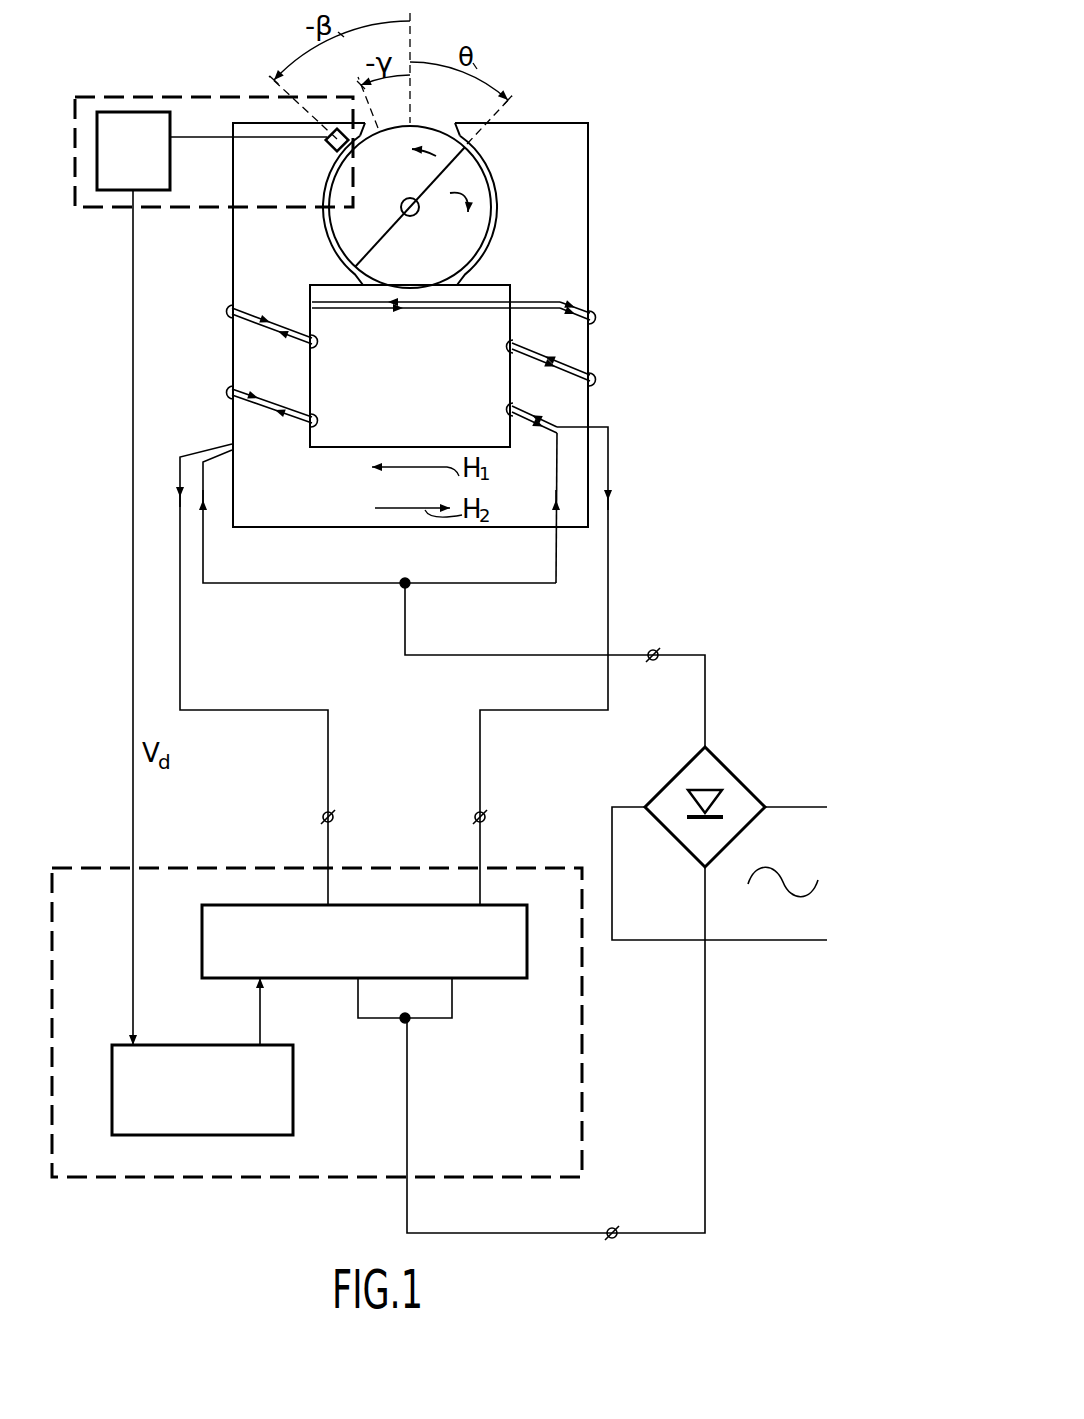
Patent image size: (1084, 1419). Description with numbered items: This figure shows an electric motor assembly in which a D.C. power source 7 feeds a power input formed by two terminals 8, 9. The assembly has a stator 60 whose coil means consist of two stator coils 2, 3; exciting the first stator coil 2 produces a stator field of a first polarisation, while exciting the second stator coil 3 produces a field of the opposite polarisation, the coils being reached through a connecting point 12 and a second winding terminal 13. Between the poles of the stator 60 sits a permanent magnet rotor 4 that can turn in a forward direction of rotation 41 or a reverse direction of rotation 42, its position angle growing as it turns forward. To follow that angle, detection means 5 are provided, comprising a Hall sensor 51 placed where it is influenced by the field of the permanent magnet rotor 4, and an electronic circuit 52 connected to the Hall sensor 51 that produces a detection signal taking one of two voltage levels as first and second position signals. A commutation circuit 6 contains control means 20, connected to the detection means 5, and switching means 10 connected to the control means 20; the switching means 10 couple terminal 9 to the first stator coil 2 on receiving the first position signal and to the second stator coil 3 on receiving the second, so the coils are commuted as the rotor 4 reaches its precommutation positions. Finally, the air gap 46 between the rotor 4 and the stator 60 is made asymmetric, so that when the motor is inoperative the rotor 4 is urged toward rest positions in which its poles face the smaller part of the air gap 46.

The stator coil 2 is at (304, 333).
The stator coil 3 is at (292, 338).
The permanent magnet rotor 4 is at (425, 124).
The detection means 5 is at (110, 207).
The commutation circuit 6 is at (152, 1185).
The D.C. power source 7 is at (726, 772).
The terminal 8 is at (653, 649).
The terminal 9 is at (612, 1227).
The switching means 10 is at (503, 980).
The connecting point 12 is at (323, 811).
The second winding terminal 13 is at (486, 811).
The control means 20 is at (294, 1114).
The forward direction of rotation 41 is at (450, 209).
The reverse direction of rotation 42 is at (418, 168).
The air gap 46 is at (489, 168).
The Hall sensor 51 is at (327, 150).
The electronic circuit 52 is at (170, 169).
The stator 60 is at (298, 528).